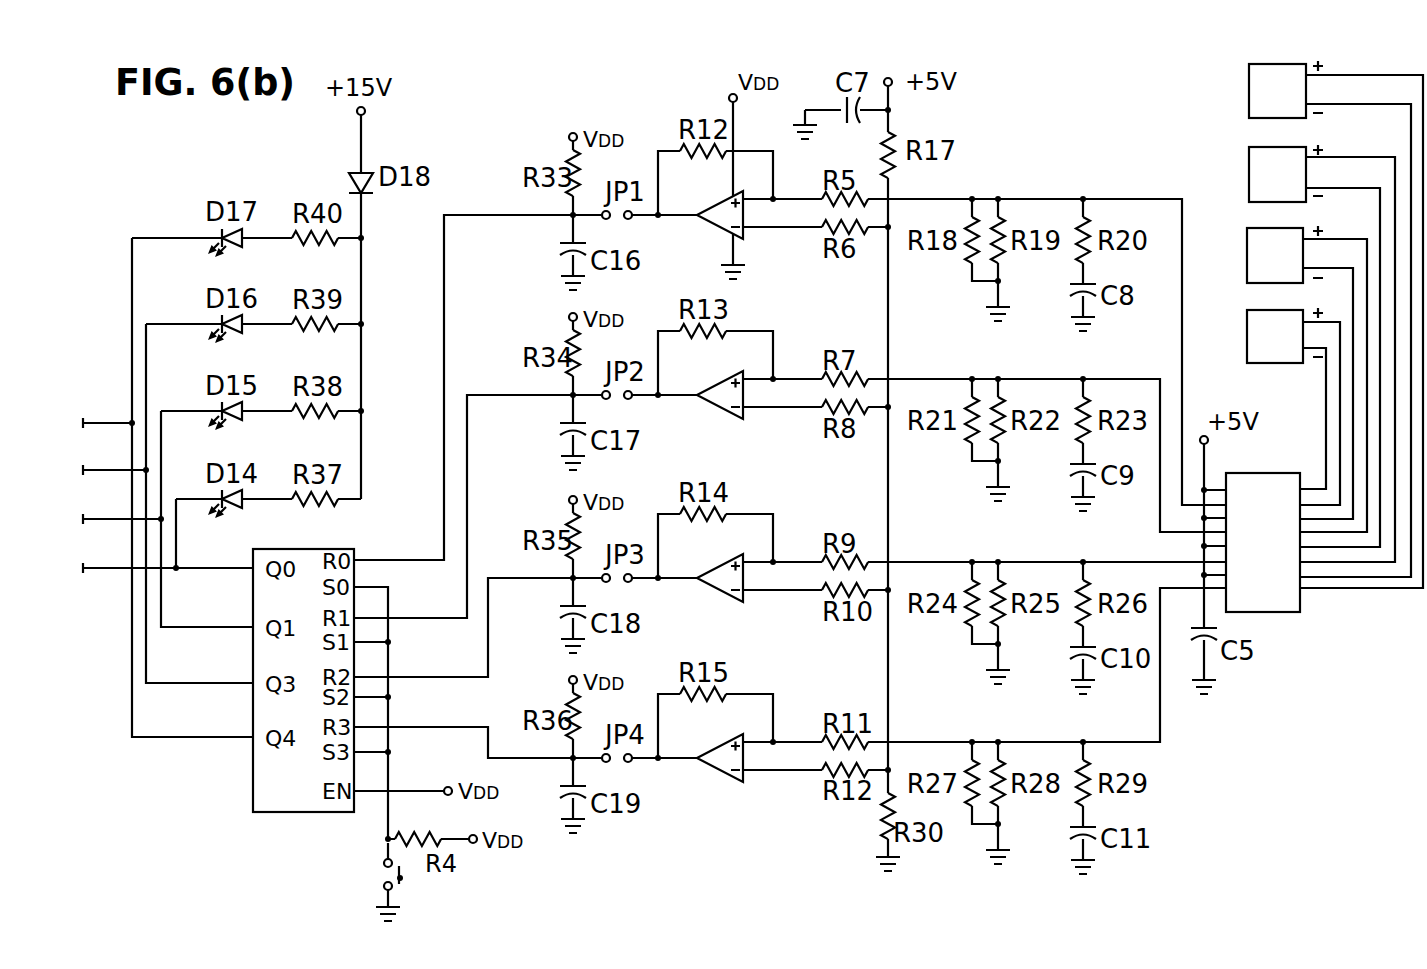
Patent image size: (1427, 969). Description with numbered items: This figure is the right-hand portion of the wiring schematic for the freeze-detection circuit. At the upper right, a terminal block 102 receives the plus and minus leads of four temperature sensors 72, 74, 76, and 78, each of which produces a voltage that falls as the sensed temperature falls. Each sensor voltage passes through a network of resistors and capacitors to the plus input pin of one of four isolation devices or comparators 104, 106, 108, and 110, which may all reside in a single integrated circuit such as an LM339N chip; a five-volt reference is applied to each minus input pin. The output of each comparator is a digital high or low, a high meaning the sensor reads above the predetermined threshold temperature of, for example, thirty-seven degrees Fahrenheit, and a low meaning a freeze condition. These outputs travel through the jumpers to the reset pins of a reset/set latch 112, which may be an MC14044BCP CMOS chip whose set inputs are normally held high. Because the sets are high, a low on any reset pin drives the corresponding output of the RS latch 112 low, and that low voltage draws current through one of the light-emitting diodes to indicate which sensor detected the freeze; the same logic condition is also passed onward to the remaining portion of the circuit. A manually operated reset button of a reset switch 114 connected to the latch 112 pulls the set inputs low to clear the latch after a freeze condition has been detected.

The sensor 72 is at (1247, 343).
The sensor 74 is at (1247, 262).
The sensor 76 is at (1249, 178).
The sensor 78 is at (1249, 95).
The terminal block 102 is at (1280, 612).
The comparator 104 is at (753, 250).
The comparator 106 is at (741, 430).
The comparator 108 is at (740, 615).
The comparator 110 is at (722, 790).
The RS latch 112 is at (253, 802).
The reset switch 114 is at (400, 890).